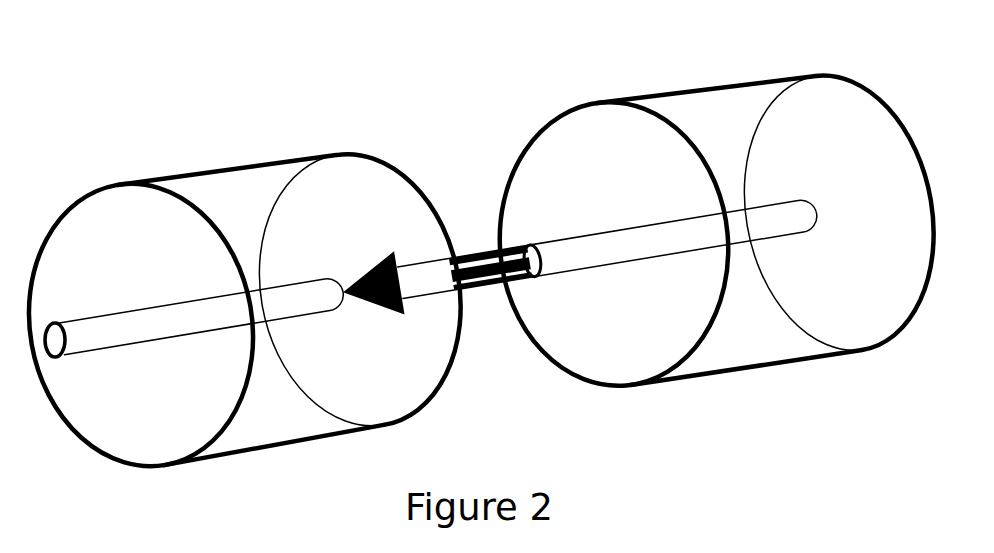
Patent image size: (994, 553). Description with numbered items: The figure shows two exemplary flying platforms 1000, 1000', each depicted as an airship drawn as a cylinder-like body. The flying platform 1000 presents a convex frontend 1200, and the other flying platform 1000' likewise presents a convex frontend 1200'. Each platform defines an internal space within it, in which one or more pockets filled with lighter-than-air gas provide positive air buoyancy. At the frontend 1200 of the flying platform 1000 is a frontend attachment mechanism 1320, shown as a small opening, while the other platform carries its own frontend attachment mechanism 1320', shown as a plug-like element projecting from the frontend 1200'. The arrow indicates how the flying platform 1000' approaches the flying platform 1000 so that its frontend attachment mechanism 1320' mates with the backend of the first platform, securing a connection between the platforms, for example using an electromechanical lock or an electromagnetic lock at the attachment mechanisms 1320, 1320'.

The convex frontend 1200 is at (141, 294).
The flying platform 1000 is at (289, 273).
The frontend attachment mechanism 1320 is at (120, 302).
The frontend attachment mechanism 1320' is at (422, 196).
The convex frontend 1200' is at (614, 219).
The flying platform 1000' is at (759, 199).